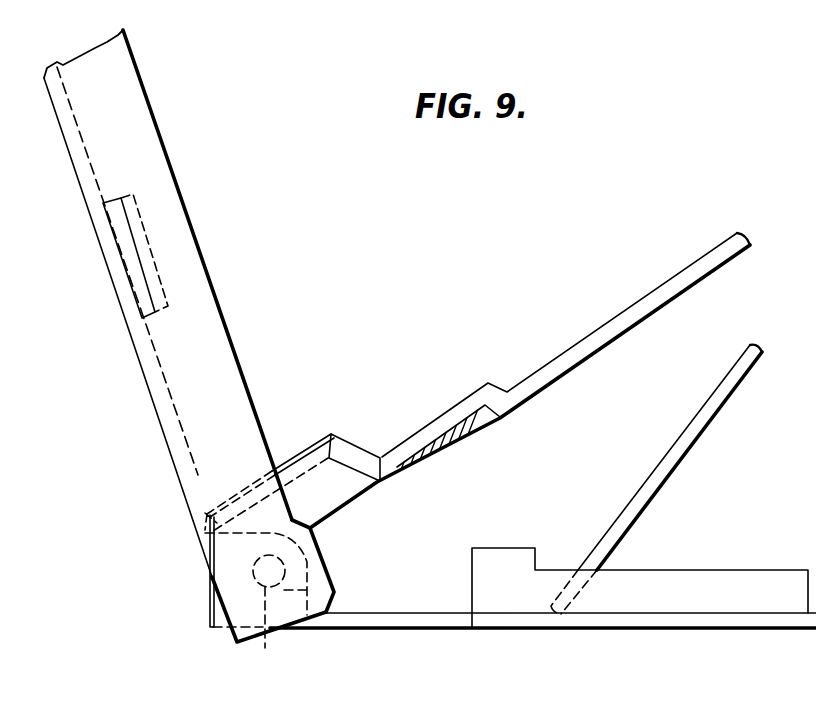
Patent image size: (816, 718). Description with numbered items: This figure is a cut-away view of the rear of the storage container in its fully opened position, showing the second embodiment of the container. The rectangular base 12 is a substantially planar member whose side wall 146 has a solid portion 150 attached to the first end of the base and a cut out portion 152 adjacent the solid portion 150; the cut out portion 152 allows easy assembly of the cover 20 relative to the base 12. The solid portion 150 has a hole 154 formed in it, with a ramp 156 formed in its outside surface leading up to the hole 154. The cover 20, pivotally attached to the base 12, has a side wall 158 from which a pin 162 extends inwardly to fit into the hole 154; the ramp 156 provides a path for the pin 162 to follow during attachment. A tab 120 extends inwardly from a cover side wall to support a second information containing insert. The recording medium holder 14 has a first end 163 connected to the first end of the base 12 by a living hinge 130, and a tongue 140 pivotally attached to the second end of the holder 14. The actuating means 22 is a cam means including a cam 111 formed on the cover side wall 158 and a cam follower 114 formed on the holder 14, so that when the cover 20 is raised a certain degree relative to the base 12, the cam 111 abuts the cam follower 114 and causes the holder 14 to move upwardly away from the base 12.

The base 12 is at (596, 619).
The recording medium holder 14 is at (417, 446).
The cover 20 is at (147, 150).
The actuating means 22 is at (317, 503).
The cam 111 is at (262, 470).
The cam follower 114 is at (331, 434).
The tab 120 is at (144, 246).
The living hinge 130 is at (208, 598).
The tongue 140 is at (687, 448).
The side wall 146 is at (743, 578).
The solid portion 150 is at (221, 618).
The cut out portion 152 is at (378, 614).
The hole 154 is at (276, 631).
The ramp 156 is at (320, 563).
The side wall 158 is at (207, 330).
The pin 162 is at (253, 565).
The first end 163 is at (215, 503).